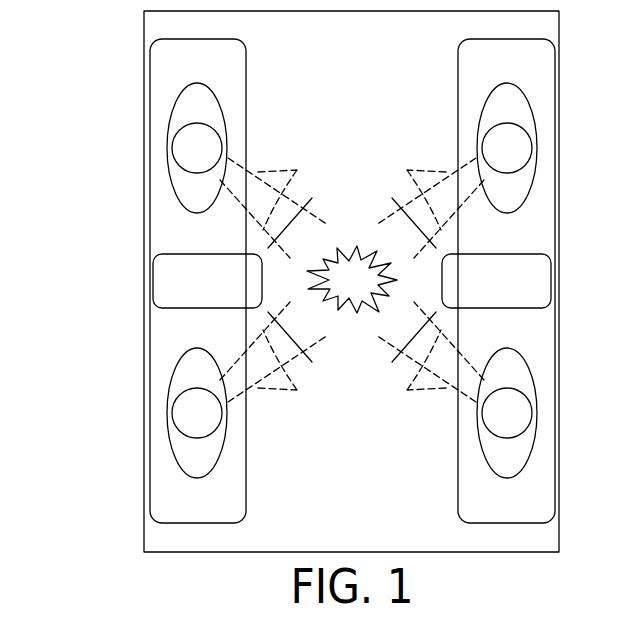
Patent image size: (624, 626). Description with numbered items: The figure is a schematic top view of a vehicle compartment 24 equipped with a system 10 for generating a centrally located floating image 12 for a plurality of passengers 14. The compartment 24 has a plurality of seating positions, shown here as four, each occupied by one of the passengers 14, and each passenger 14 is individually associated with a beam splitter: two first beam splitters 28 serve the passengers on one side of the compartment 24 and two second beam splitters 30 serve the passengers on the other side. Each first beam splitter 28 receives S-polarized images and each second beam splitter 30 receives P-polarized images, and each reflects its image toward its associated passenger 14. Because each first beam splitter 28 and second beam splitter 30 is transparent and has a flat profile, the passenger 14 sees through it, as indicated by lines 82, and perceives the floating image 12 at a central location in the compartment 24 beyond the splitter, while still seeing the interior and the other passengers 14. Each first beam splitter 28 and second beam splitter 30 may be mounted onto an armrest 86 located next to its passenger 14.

The system 10 is at (294, 313).
The floating image 12 is at (341, 289).
The passengers 14 is at (189, 108).
The vehicle compartment 24 is at (524, 560).
The first beam splitter 28 is at (288, 225).
The second beam splitter 30 is at (396, 197).
The lines 82 is at (352, 280).
The armrest 86 is at (196, 292).